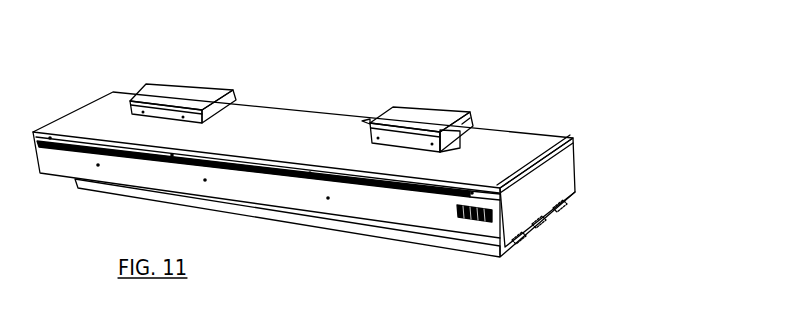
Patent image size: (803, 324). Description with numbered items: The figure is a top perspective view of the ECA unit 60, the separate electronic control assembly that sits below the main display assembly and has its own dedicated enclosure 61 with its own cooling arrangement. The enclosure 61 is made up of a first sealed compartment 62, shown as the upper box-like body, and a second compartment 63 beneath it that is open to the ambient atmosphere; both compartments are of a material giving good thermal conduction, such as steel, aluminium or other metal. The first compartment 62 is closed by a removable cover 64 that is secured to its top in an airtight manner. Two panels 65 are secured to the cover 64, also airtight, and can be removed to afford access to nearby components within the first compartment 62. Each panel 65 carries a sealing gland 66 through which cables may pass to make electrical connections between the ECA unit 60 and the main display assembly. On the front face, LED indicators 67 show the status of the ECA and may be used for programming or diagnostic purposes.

The ECA unit 60 is at (340, 73).
The enclosure 61 is at (600, 178).
The first sealed compartment 62 is at (567, 170).
The second compartment 63 is at (375, 230).
The removable cover 64 is at (97, 113).
The panels 65 is at (185, 95).
The sealing gland 66 is at (473, 127).
The LED indicators 67 is at (472, 215).